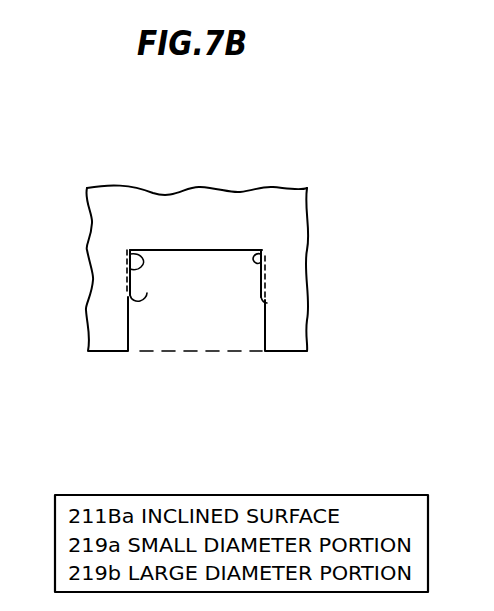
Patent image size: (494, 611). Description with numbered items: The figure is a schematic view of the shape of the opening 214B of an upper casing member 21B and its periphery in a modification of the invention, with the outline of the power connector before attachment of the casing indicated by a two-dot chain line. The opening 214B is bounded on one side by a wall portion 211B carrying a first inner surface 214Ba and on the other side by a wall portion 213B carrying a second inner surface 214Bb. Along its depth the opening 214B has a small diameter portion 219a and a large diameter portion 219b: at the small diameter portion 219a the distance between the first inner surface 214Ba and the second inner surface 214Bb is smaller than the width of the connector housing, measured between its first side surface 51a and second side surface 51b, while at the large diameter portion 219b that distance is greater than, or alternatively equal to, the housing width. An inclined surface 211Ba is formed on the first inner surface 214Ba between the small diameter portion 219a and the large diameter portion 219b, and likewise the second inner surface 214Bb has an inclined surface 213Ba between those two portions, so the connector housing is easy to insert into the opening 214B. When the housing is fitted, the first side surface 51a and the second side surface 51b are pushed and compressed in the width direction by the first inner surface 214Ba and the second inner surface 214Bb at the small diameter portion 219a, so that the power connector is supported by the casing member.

The upper casing member 21B is at (190, 200).
The first inner surface 211B is at (98, 343).
The inclined surface 211Ba is at (147, 293).
The second inner surface 213B is at (288, 343).
The inclined surface 213Ba is at (263, 299).
The opening 214B is at (192, 332).
The first inner surface 214Ba is at (140, 265).
The second inner surface 214Bb is at (262, 252).
The small diameter portion 219a is at (235, 274).
The large diameter portion 219b is at (256, 331).
The first side surface 51a is at (128, 290).
The second side surface 51b is at (265, 278).